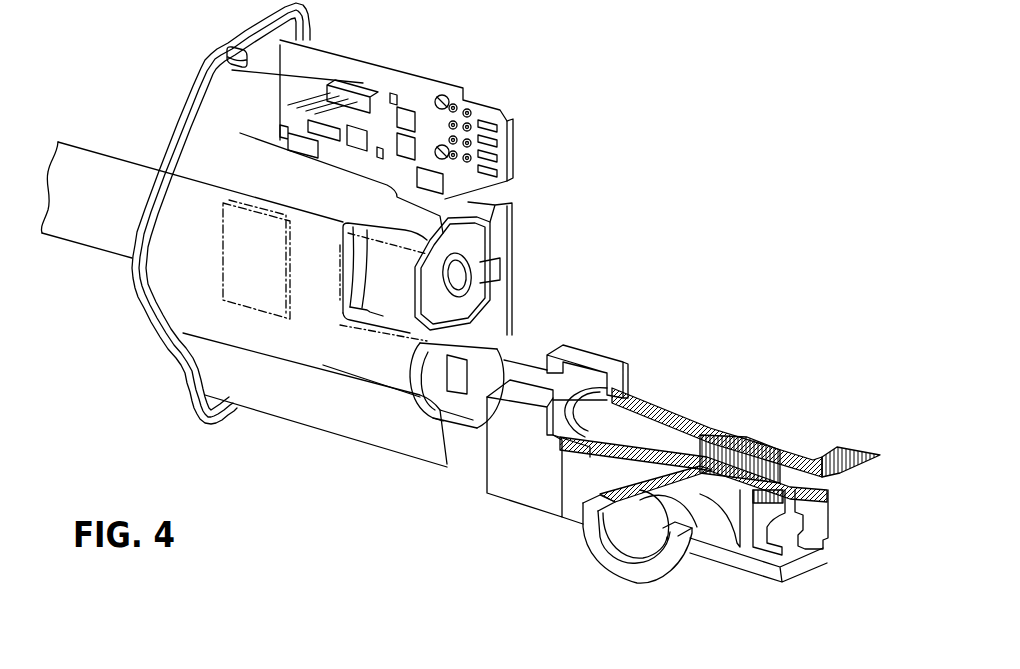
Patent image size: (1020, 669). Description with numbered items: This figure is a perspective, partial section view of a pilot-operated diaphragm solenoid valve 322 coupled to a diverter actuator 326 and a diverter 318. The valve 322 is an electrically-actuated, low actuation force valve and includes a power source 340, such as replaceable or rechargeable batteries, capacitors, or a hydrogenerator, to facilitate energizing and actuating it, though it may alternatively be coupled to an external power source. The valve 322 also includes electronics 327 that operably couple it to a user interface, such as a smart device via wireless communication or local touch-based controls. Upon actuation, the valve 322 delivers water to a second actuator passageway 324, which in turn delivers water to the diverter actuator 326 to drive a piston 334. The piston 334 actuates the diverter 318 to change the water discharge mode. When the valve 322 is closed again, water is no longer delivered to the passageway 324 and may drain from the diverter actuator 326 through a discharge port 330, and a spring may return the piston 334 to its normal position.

The diverter 318 is at (793, 470).
The pilot-operated diaphragm solenoid valve 322 is at (473, 233).
The second actuator passageway 324 is at (480, 443).
The diverter actuator 326 is at (597, 360).
The electronics 327 is at (510, 142).
The discharge port 330 is at (640, 500).
The piston 334 is at (740, 457).
The power source 340 is at (223, 272).